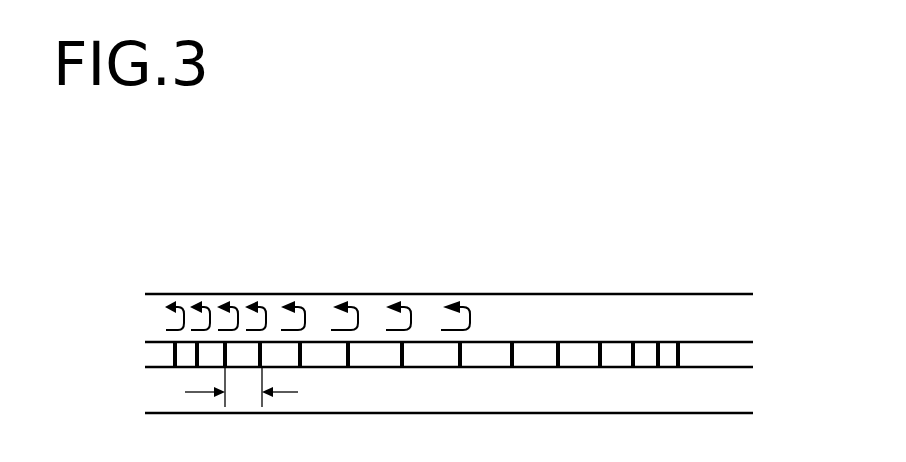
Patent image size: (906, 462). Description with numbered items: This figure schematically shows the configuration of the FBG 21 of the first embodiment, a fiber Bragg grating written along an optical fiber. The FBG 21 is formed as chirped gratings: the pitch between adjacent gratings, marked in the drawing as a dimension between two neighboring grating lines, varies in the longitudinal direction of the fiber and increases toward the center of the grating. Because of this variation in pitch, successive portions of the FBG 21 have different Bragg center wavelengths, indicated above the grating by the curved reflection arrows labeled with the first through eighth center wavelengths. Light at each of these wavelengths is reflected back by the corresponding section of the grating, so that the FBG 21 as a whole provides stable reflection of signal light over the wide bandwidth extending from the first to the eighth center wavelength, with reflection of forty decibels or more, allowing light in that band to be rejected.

The FBG 21 is at (668, 273).